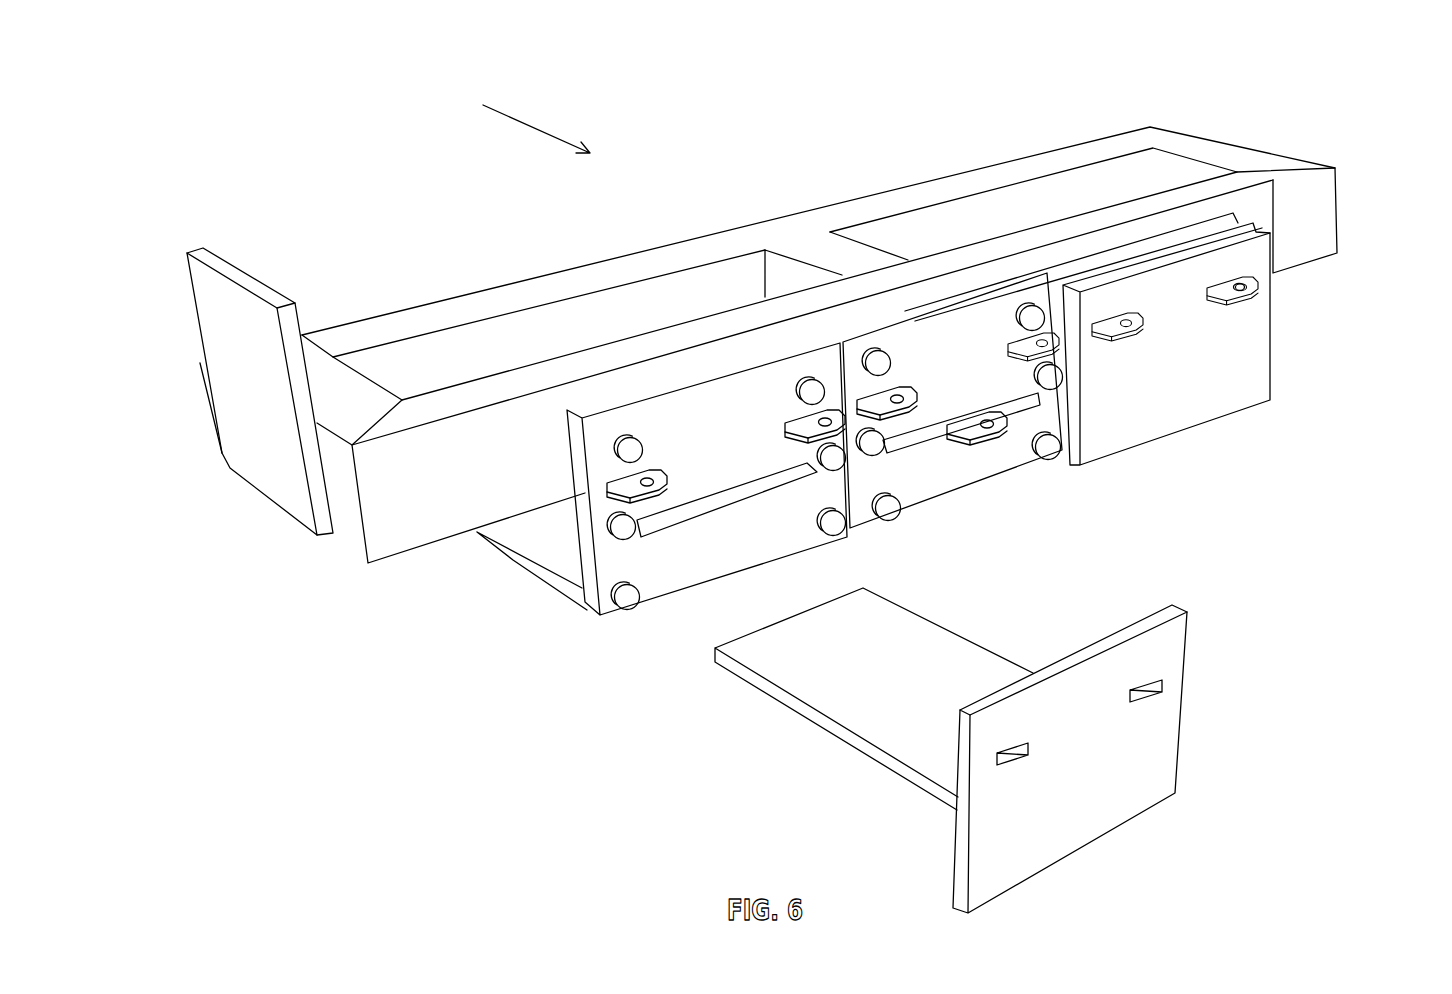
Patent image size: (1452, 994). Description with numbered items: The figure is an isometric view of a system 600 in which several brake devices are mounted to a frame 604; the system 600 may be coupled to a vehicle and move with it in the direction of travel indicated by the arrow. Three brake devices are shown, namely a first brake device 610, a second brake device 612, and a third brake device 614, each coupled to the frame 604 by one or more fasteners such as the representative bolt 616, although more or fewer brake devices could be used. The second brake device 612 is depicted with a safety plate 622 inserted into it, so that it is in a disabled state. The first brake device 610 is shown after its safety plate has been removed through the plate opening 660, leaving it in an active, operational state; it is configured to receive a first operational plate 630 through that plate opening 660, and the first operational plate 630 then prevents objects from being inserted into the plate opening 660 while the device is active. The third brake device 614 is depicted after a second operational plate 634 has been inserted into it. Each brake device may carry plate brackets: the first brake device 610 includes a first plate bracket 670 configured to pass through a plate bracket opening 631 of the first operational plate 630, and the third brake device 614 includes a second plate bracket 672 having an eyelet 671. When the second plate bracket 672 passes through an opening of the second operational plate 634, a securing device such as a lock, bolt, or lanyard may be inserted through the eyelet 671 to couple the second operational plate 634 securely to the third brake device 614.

The system 600 is at (178, 68).
The frame 604 is at (802, 210).
The first brake device 610 is at (513, 560).
The second brake device 612 is at (915, 507).
The third brake device 614 is at (1247, 210).
The bolt 616 is at (639, 443).
The safety plate 622 is at (973, 442).
The first operational plate 630 is at (1143, 813).
The plate bracket opening 631 is at (1016, 778).
The second operational plate 634 is at (1113, 453).
The plate opening 660 is at (682, 535).
The first plate bracket 670 is at (603, 488).
The eyelet 671 is at (1233, 287).
The second plate bracket 672 is at (1222, 303).